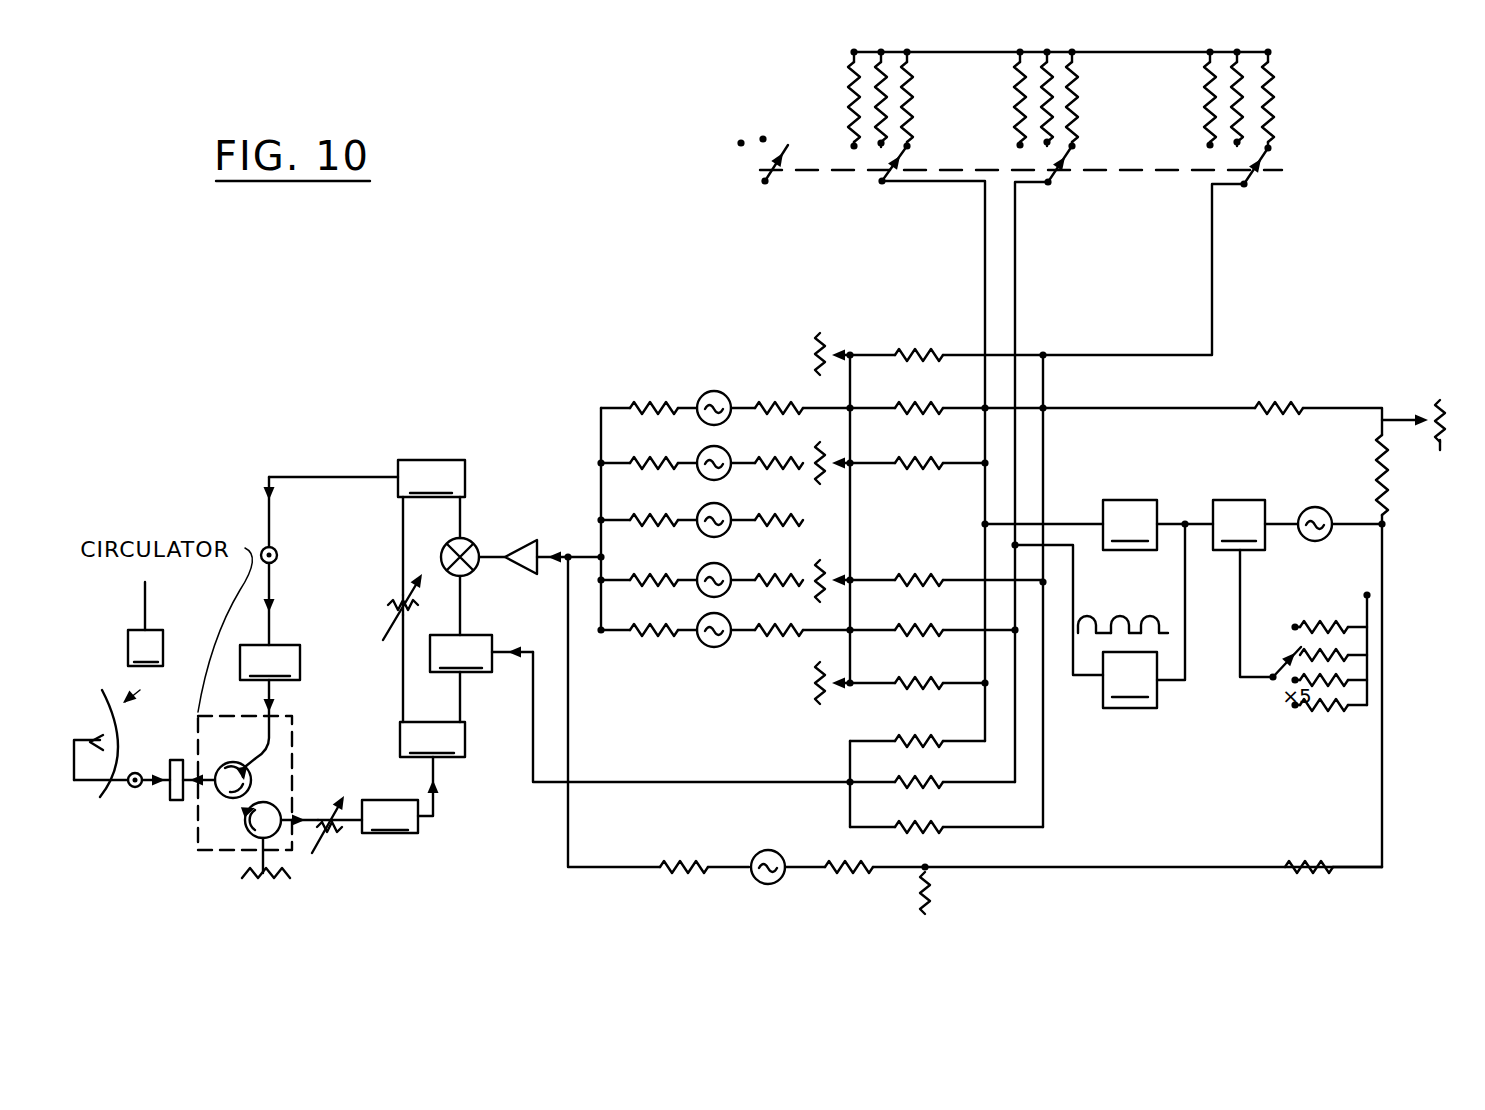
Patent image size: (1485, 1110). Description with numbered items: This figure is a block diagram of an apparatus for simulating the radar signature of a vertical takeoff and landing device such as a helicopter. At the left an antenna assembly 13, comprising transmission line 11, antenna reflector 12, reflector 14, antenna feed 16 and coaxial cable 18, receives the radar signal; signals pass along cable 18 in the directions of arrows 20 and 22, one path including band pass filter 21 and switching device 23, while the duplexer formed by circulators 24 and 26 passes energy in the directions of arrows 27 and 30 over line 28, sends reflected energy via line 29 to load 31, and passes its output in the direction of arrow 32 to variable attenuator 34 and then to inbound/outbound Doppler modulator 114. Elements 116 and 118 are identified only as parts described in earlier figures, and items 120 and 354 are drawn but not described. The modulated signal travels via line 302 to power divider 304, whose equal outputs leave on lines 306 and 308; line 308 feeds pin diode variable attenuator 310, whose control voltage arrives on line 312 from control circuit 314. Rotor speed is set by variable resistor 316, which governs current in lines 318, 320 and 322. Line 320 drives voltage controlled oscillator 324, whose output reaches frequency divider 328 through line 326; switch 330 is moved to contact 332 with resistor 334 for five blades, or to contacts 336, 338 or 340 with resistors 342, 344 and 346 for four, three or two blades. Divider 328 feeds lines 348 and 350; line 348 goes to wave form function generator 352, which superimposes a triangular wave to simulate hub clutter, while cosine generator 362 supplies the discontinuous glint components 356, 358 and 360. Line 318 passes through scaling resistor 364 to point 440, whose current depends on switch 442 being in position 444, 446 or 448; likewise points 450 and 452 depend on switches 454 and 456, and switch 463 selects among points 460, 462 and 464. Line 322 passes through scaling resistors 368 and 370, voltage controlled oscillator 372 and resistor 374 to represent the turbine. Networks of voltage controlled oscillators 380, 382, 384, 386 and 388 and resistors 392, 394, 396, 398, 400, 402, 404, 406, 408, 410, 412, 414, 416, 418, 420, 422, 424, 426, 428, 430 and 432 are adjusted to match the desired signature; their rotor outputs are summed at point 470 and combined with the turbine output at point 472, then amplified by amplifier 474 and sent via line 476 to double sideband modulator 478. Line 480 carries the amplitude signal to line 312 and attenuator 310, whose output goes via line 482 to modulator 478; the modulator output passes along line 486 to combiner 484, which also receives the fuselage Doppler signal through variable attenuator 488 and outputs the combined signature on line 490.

The transmission line 11 is at (128, 790).
The antenna reflector 12 is at (143, 693).
The antenna assembly 13 is at (146, 624).
The reflector 14 is at (118, 770).
The antenna feed 16 is at (108, 718).
The coaxial cable 18 is at (88, 786).
The arrow 20 is at (170, 762).
The band pass filter 21 is at (180, 802).
The arrow 22 is at (195, 815).
The switching device 23 is at (287, 718).
The circulator 24 is at (228, 765).
The circulator 26 is at (250, 815).
The arrow 27 is at (240, 763).
The line 28 is at (252, 781).
The line 29 is at (245, 872).
The arrow 30 is at (246, 825).
The load 31 is at (276, 873).
The arrow 32 is at (302, 815).
The variable attenuator 34 is at (336, 805).
The inbound/outbound Doppler modulator 114 is at (390, 816).
The element 116 is at (268, 515).
The element 118 is at (270, 662).
The transmit line 120 is at (268, 700).
The line 302 is at (440, 780).
The power divider 304 is at (432, 739).
The line 306 is at (403, 692).
The line 308 is at (463, 697).
The pin diode variable attenuator 310 is at (461, 653).
The line 312 is at (522, 658).
The control circuit 314 is at (1226, 330).
The variable resistor 316 is at (1440, 450).
The line 318 is at (1355, 406).
The line 320 is at (1358, 520).
The line 322 is at (1358, 870).
The voltage controlled oscillator 324 is at (1302, 510).
The line 326 is at (1280, 520).
The frequency divider 328 is at (1239, 525).
The switch 330 is at (1240, 678).
The contact 332 is at (1296, 707).
The resistor 334 is at (1352, 708).
The contact 336 is at (1294, 683).
The contact 338 is at (1299, 650).
The contact 340 is at (1294, 625).
The resistor 342 is at (1352, 683).
The resistor 344 is at (1352, 658).
The resistor 346 is at (1325, 625).
The line 348 is at (1168, 520).
The line 350 is at (1190, 555).
The wave form function generator 352 is at (1130, 525).
The coil 354 is at (1105, 636).
The glint component 356 is at (1088, 620).
The glint component 358 is at (1125, 618).
The glint component 360 is at (1038, 262).
The cosine generator 362 is at (1130, 680).
The scaling resistor 364 is at (1258, 405).
The scaling resistor 368 is at (1295, 865).
The scaling resistor 370 is at (932, 890).
The voltage controlled oscillator 372 is at (765, 886).
The resistor 374 is at (684, 872).
The voltage controlled oscillator 380 is at (727, 380).
The voltage controlled oscillator 382 is at (697, 457).
The voltage controlled oscillator 384 is at (697, 514).
The voltage controlled oscillator 386 is at (697, 572).
The voltage controlled oscillator 388 is at (699, 622).
The resistor 392 is at (918, 352).
The resistor 394 is at (918, 404).
The resistor 396 is at (918, 460).
The resistor 398 is at (782, 402).
The resistor 400 is at (664, 402).
The resistor 402 is at (795, 460).
The resistor 404 is at (625, 460).
The resistor 406 is at (795, 517).
The resistor 408 is at (625, 517).
The resistor 410 is at (790, 575).
The resistor 412 is at (658, 632).
The resistor 414 is at (918, 586).
The resistor 416 is at (918, 636).
The resistor 418 is at (918, 690).
The resistor 420 is at (930, 745).
The resistor 422 is at (930, 786).
The resistor 424 is at (930, 831).
The resistor 426 is at (826, 565).
The resistor 428 is at (798, 632).
The resistor 430 is at (685, 635).
The resistor 432 is at (855, 872).
The point 440 is at (1047, 407).
The switch 442 is at (1247, 187).
The switch position 444 is at (1208, 143).
The switch position 446 is at (1270, 143).
The switch position 448 is at (1271, 150).
The point 450 is at (1000, 540).
The point 452 is at (985, 520).
The switch 454 is at (1050, 185).
The switch 456 is at (880, 183).
The point 460 is at (741, 143).
The point 462 is at (763, 138).
The switch 463 is at (762, 177).
The point 464 is at (786, 144).
The summing point 470 is at (595, 552).
The summing point 472 is at (560, 556).
The amplifier 474 is at (525, 540).
The line 476 is at (480, 565).
The double sideband modulator 478 is at (462, 537).
The line 480 is at (533, 762).
The line 482 is at (462, 606).
The combiner 484 is at (431, 478).
The line 486 is at (460, 505).
The variable attenuator 488 is at (402, 600).
The line 490 is at (352, 475).